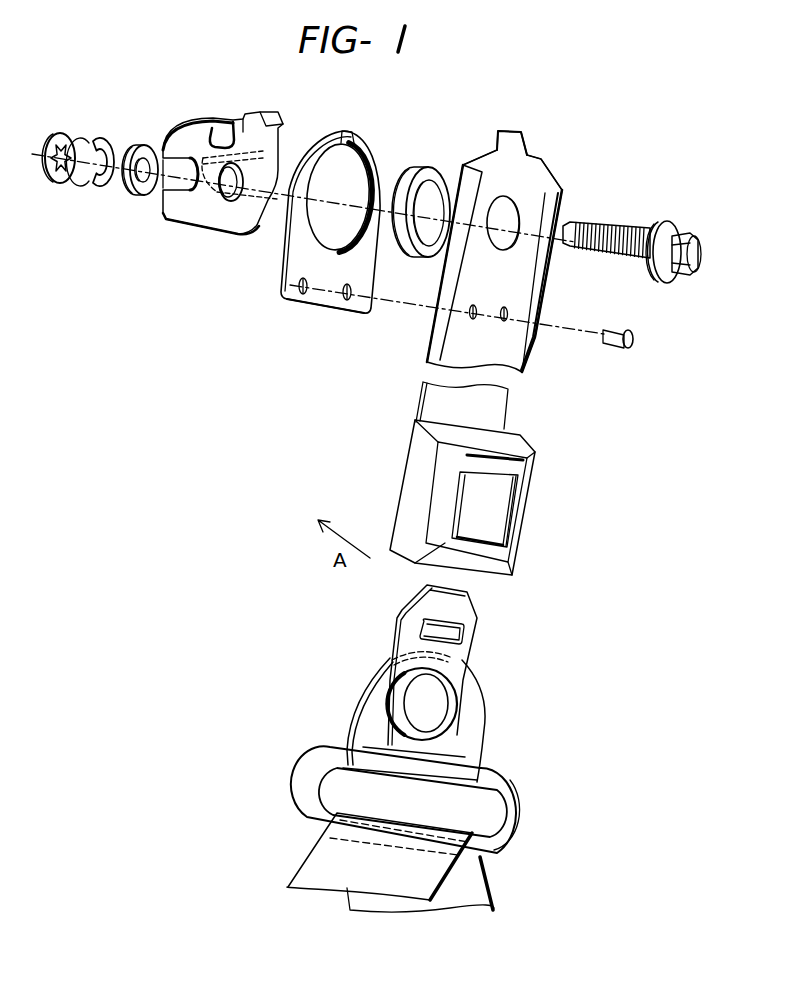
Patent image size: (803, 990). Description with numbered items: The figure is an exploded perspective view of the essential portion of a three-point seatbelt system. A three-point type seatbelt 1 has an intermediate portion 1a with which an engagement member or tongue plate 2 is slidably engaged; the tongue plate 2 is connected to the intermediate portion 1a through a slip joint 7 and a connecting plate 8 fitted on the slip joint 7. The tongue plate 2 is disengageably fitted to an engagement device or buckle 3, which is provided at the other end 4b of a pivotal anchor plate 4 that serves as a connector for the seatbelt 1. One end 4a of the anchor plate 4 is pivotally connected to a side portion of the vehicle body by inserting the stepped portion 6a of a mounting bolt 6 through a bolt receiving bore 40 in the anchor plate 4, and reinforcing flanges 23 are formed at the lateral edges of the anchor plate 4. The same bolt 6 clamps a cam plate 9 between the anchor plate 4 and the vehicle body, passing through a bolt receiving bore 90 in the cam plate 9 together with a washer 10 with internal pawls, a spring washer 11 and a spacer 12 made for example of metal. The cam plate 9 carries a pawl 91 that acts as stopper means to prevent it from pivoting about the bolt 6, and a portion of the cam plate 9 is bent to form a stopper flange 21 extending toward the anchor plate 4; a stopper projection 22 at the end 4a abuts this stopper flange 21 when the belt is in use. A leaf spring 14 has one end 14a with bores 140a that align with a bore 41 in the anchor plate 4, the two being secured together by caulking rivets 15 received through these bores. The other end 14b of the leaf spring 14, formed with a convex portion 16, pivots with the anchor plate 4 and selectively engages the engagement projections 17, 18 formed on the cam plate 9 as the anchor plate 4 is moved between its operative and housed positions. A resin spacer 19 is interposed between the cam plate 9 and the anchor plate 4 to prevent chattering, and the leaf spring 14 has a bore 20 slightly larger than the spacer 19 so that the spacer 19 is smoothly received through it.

The three-point type seatbelt 1 is at (401, 865).
The intermediate portion of the seatbelt 1a is at (443, 867).
The engagement member (tongue plate) 2 is at (470, 617).
The engagement device (buckle) 3 is at (418, 483).
The anchor plate 4 is at (491, 271).
The one end of the anchor plate 4a is at (537, 180).
The other end of the anchor plate 4b is at (500, 405).
The mounting bolt 6 is at (632, 273).
The stepped portion of the mounting bolt 6a is at (657, 278).
The slip joint 7 is at (518, 803).
The connecting plate 8 is at (474, 713).
The cam plate 9 is at (204, 177).
The washer with internal pawls 10 is at (60, 134).
The spring washer 11 is at (98, 141).
The spacer 12 is at (138, 145).
The leaf spring 14 is at (351, 225).
The one end of the leaf spring 14a is at (367, 312).
The other end of the leaf spring 14b is at (363, 147).
The rivets 15 is at (634, 342).
The convex portion 16 is at (347, 129).
The engagement projection 17 is at (218, 124).
The engagement projection 18 is at (175, 175).
The resin spacer 19 is at (434, 178).
The bore 20 is at (318, 237).
The stopper flange 21 is at (262, 115).
The stopper projection 22 is at (527, 142).
The reinforcing flanges 23 is at (455, 288).
The bolt receiving bore 40 is at (508, 202).
The bore 41 is at (502, 320).
The bolt receiving bore 90 is at (221, 196).
The pawl 91 is at (235, 201).
The bores 140a is at (345, 300).